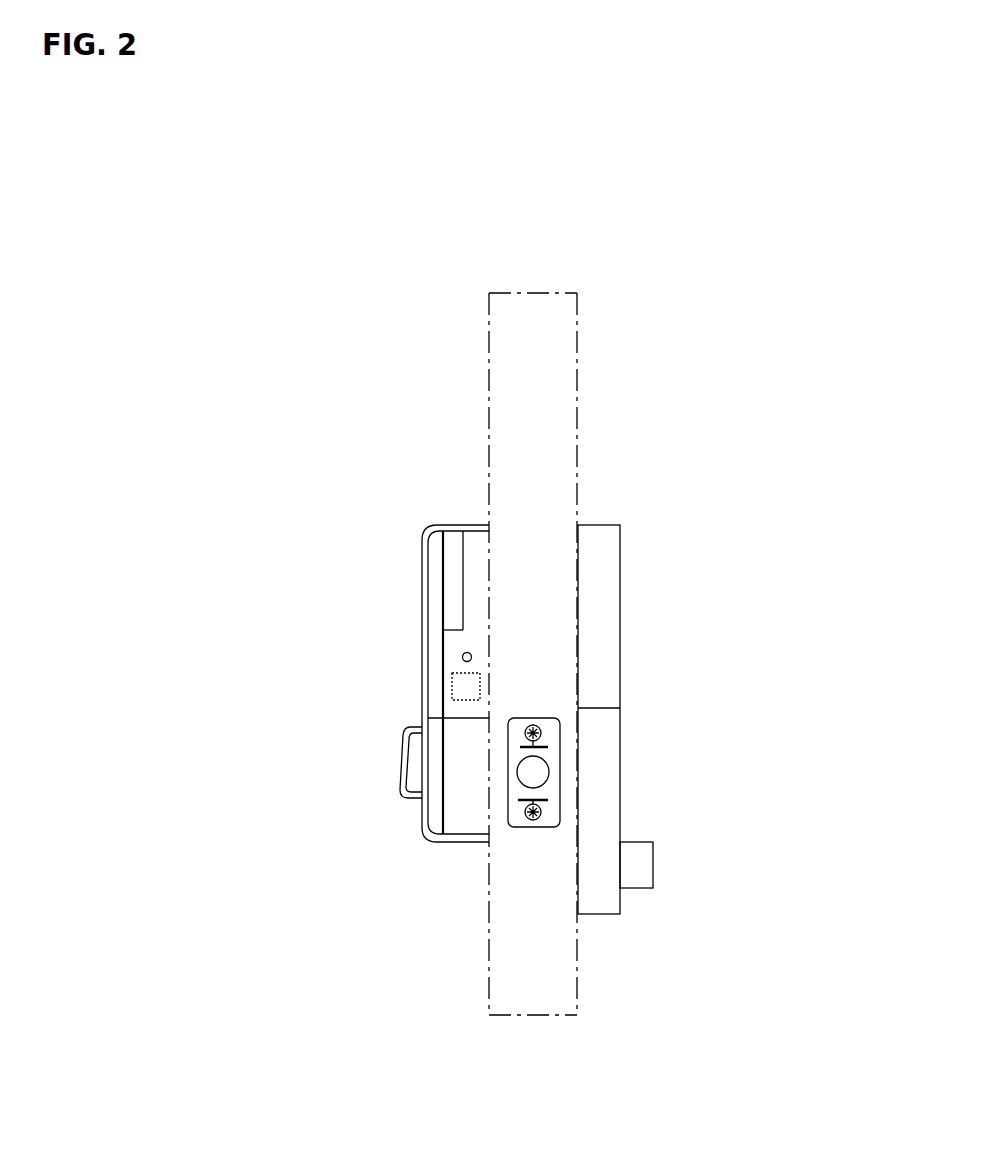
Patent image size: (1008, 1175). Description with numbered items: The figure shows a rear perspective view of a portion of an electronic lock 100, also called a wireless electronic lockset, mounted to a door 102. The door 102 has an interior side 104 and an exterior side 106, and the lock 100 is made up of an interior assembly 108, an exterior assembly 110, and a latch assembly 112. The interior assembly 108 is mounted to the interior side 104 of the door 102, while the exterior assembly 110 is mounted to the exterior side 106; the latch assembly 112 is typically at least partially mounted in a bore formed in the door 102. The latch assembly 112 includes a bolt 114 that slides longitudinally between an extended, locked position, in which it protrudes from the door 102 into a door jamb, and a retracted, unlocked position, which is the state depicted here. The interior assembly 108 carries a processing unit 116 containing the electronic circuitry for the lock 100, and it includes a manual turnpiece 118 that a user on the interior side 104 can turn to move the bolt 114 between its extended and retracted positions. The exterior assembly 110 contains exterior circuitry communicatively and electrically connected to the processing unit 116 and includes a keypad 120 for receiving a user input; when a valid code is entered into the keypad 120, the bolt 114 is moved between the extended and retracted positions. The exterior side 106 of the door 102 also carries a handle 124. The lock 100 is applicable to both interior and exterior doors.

The electronic lock 100 is at (539, 698).
The door 102 is at (527, 598).
The interior side 104 is at (488, 340).
The exterior side 106 is at (578, 360).
The interior assembly 108 is at (364, 657).
The exterior assembly 110 is at (662, 689).
The latch assembly 112 is at (421, 825).
The bolt 114 is at (530, 773).
The processing unit 116 is at (465, 685).
The manual turnpiece 118 is at (400, 765).
The keypad 120 is at (620, 622).
The handle 124 is at (642, 866).